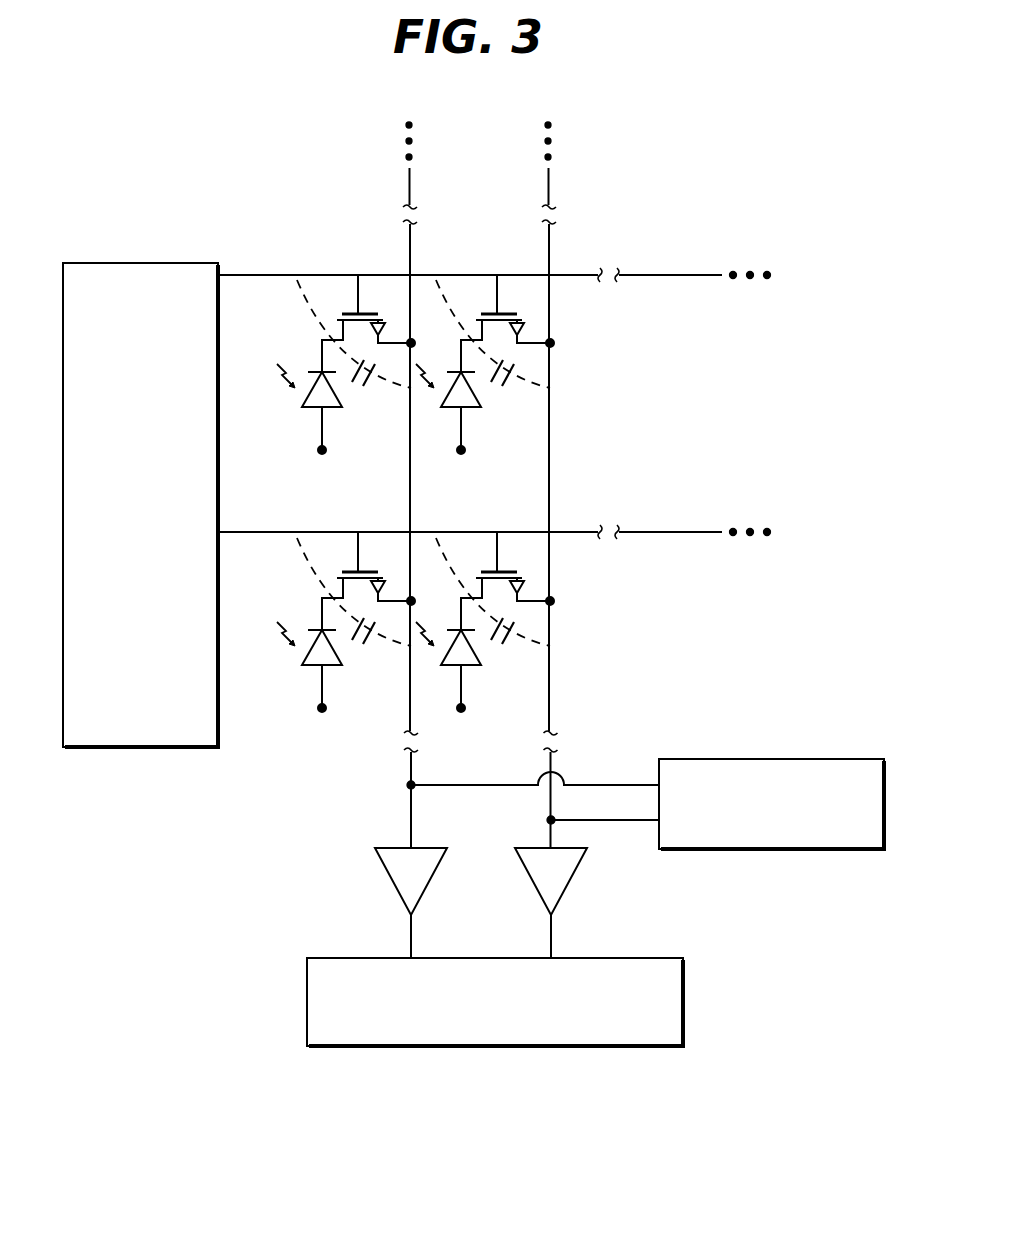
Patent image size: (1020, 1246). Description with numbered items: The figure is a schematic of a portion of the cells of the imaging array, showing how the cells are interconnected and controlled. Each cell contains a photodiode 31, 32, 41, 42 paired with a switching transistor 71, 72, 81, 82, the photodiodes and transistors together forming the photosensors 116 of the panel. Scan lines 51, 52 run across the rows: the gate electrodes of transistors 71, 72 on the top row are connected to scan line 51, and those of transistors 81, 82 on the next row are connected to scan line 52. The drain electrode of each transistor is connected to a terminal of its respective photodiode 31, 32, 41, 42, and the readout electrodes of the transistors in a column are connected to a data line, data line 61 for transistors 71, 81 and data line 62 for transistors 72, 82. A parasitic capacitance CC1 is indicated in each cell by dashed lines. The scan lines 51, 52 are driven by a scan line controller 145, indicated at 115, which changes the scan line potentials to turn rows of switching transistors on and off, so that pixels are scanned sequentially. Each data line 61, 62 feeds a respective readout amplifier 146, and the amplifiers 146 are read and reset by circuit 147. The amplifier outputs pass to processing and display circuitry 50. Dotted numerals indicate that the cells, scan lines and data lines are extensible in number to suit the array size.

The switch control circuit arrow / controller 115 is at (185, 202).
The scan line controller 145 is at (165, 749).
The photosensor 116 is at (727, 357).
The data line 61 is at (410, 185).
The data line 62 is at (549, 185).
The scan line 51 is at (658, 274).
The scan line 52 is at (658, 531).
The switching transistor 71 is at (346, 312).
The switching transistor 72 is at (489, 312).
The switching transistor 81 is at (346, 570).
The switching transistor 82 is at (507, 570).
The photodiode 31 is at (305, 406).
The photodiode 32 is at (479, 407).
The photodiode 41 is at (308, 666).
The photodiode 42 is at (479, 665).
The parasitic capacitance CC1 is at (302, 298).
The read and reset circuit 147 is at (743, 759).
The readout amplifier 146 is at (436, 882).
The processing and display circuitry 50 is at (590, 1048).